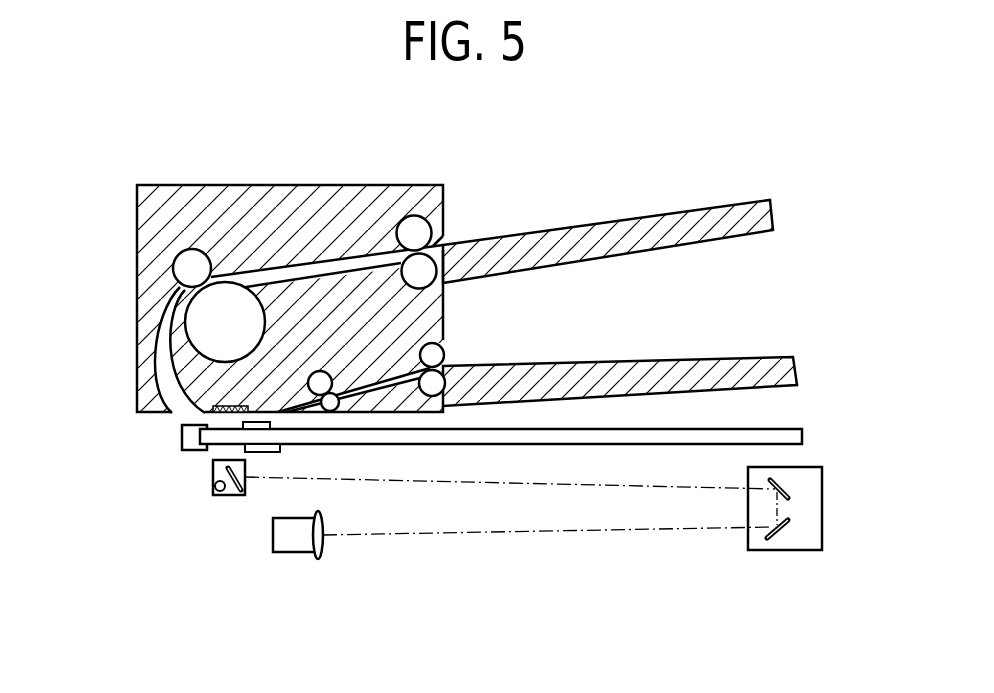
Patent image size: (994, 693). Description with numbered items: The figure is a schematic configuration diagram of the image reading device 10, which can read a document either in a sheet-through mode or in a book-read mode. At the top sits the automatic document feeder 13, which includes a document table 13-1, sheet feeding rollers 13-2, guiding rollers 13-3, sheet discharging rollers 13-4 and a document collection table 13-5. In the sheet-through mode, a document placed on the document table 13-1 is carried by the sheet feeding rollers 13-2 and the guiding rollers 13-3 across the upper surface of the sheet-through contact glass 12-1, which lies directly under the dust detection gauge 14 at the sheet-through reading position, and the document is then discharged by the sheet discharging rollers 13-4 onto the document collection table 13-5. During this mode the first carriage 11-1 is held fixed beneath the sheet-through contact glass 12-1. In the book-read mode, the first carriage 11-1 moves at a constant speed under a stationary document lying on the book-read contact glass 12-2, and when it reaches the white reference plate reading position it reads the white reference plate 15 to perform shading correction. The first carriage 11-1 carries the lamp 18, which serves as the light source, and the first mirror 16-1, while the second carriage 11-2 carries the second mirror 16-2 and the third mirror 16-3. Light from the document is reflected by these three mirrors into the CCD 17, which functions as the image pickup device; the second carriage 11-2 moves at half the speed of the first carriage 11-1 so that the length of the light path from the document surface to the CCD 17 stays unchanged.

The image reading device 10 is at (106, 156).
The automatic document feeder 13 is at (263, 185).
The document table 13-1 is at (712, 202).
The sheet feeding rollers 13-2 is at (433, 270).
The guiding rollers 13-3 is at (205, 337).
The sheet discharging rollers 13-4 is at (331, 394).
The document collection table 13-5 is at (727, 357).
The dust detection gauge 14 is at (236, 406).
The sheet-through contact glass 12-1 is at (182, 438).
The book-read contact glass 12-2 is at (803, 436).
The white reference plate 15 is at (270, 452).
The first carriage 11-1 is at (213, 476).
The lamp 18 is at (216, 488).
The first mirror 16-1 is at (240, 493).
The CCD 17 is at (295, 553).
The second carriage 11-2 is at (782, 551).
The second mirror 16-2 is at (790, 487).
The third mirror 16-3 is at (790, 529).